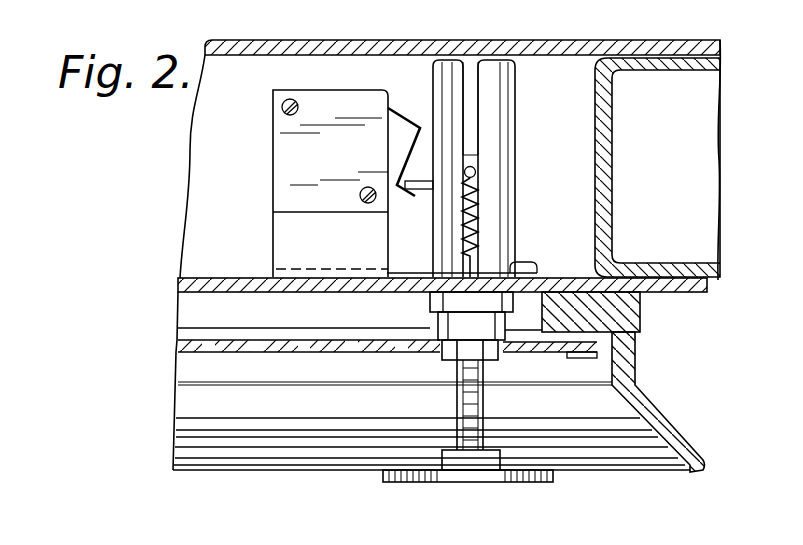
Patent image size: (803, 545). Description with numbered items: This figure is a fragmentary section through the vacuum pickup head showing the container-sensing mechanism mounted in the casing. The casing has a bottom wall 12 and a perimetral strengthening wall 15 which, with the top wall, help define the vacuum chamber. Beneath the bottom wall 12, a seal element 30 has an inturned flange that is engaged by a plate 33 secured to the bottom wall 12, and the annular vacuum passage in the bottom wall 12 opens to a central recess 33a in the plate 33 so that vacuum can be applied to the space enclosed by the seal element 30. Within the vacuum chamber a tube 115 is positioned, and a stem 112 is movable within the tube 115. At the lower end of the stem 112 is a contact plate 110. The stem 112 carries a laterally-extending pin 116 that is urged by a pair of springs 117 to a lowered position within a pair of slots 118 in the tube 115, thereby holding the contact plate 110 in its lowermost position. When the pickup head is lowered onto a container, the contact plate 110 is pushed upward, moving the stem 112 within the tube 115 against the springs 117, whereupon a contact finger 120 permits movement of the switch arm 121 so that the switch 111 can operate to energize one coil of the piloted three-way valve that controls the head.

The bottom wall 12 is at (210, 290).
The perimetral strengthening wall 15 is at (596, 205).
The seal element 30 is at (645, 404).
The plate 33 is at (637, 318).
The central recess 33a is at (395, 323).
The contact plate 110 is at (528, 479).
The switch 111 is at (280, 177).
The stem 112 is at (488, 382).
The tube 115 is at (510, 137).
The laterally-extending pin 116 is at (476, 172).
The springs 117 is at (478, 231).
The slots 118 is at (472, 88).
The contact finger 120 is at (421, 196).
The switch arm 121 is at (418, 148).